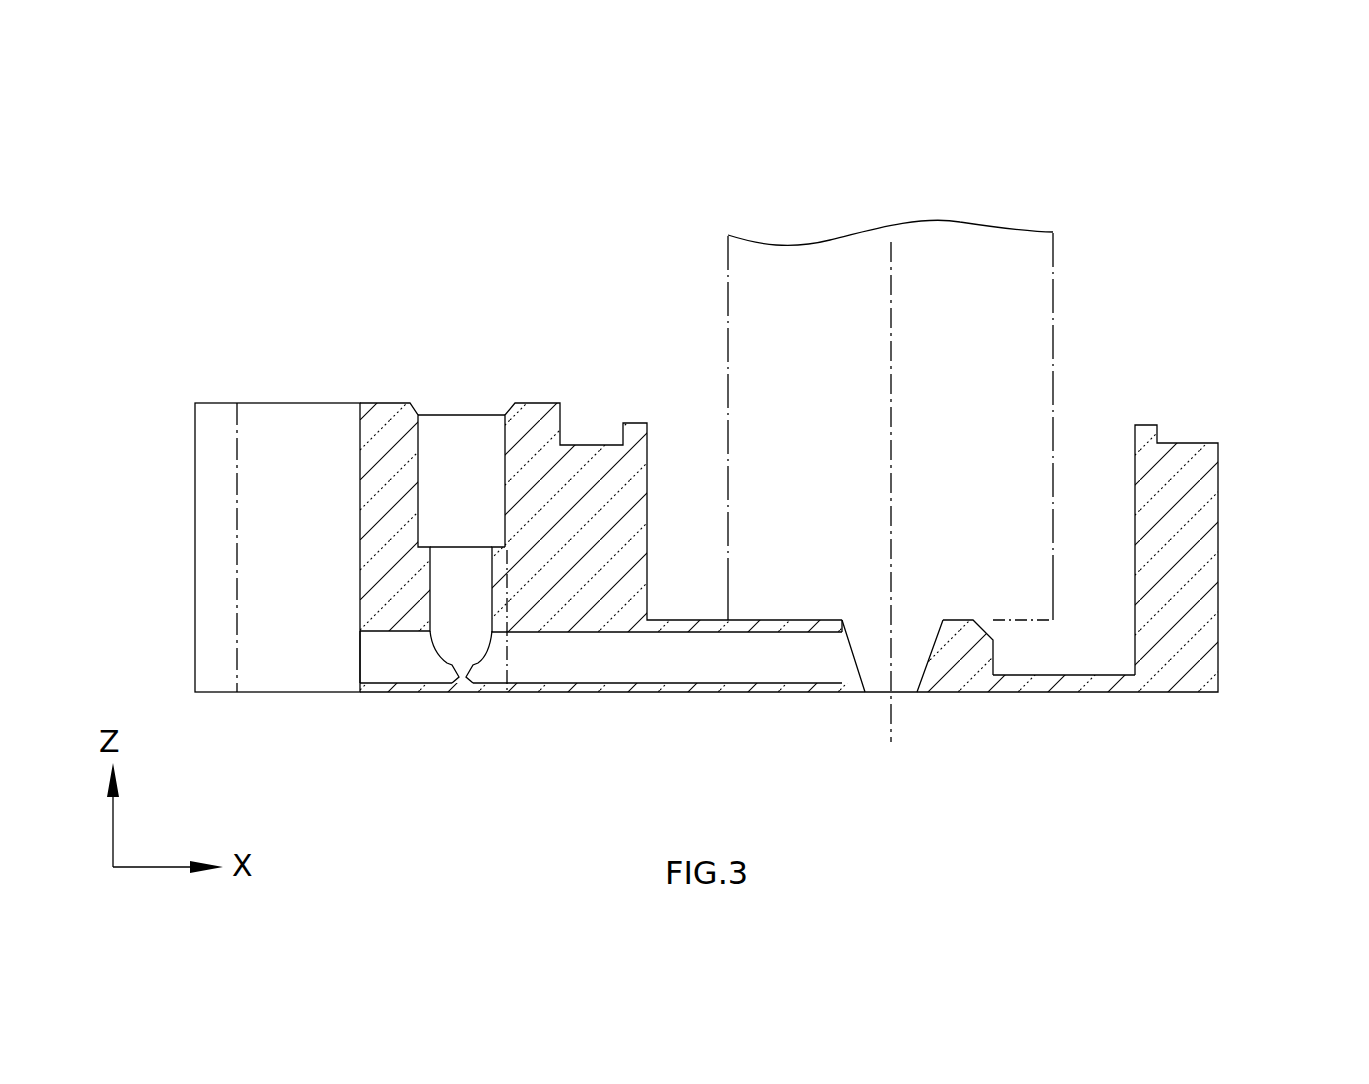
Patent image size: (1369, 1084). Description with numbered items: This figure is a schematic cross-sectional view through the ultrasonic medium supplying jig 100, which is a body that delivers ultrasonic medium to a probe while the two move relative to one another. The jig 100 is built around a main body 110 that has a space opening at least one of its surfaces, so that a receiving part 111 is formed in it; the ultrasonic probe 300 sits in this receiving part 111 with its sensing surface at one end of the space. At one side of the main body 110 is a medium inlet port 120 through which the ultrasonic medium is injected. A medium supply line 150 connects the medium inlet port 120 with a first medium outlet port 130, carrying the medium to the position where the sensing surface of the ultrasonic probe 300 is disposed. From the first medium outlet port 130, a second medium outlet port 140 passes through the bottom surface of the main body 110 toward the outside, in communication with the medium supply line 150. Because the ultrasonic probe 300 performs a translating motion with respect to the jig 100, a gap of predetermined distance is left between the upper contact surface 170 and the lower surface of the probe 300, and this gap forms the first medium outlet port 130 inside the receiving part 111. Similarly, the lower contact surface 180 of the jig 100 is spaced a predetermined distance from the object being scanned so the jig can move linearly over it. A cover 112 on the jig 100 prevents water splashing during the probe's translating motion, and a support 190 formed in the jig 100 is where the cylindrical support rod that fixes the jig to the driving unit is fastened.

The ultrasonic medium supplying jig 100 is at (416, 246).
The main body 110 is at (1218, 443).
The receiving part 111 is at (1085, 474).
The cover 112 is at (598, 448).
The medium inlet port 120 is at (458, 408).
The first medium outlet port 130 is at (878, 628).
The second medium outlet port 140 is at (868, 700).
The medium supply line 150 is at (620, 663).
The upper contact surface 170 is at (955, 620).
The lower contact surface 180 is at (955, 700).
The support 190 is at (314, 428).
The ultrasonic probe 300 is at (1030, 270).